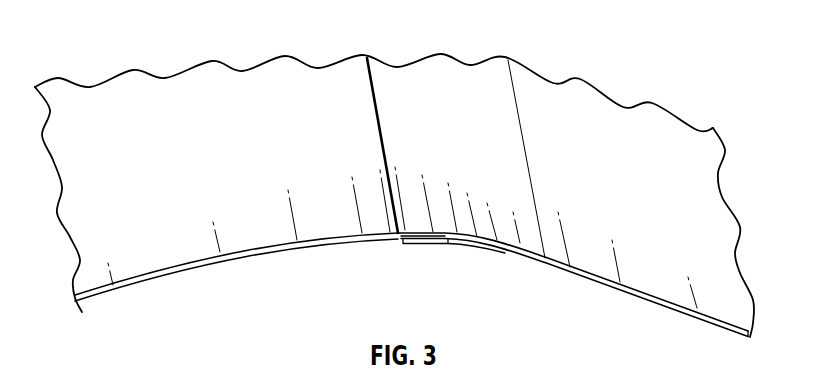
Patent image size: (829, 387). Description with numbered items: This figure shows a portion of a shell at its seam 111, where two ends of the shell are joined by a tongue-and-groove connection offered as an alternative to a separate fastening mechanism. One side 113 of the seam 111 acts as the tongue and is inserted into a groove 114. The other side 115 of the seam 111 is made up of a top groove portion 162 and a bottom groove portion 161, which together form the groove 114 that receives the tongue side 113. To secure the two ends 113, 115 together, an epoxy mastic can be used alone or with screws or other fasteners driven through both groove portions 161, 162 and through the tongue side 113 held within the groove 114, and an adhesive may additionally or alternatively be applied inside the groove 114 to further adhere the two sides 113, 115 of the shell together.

The shell seam 111 is at (393, 247).
The tongue side of the seam 113 is at (430, 245).
The groove 114 is at (444, 247).
The other side of the seam 115 is at (527, 259).
The bottom groove portion 161 is at (462, 250).
The top groove portion 162 is at (442, 78).